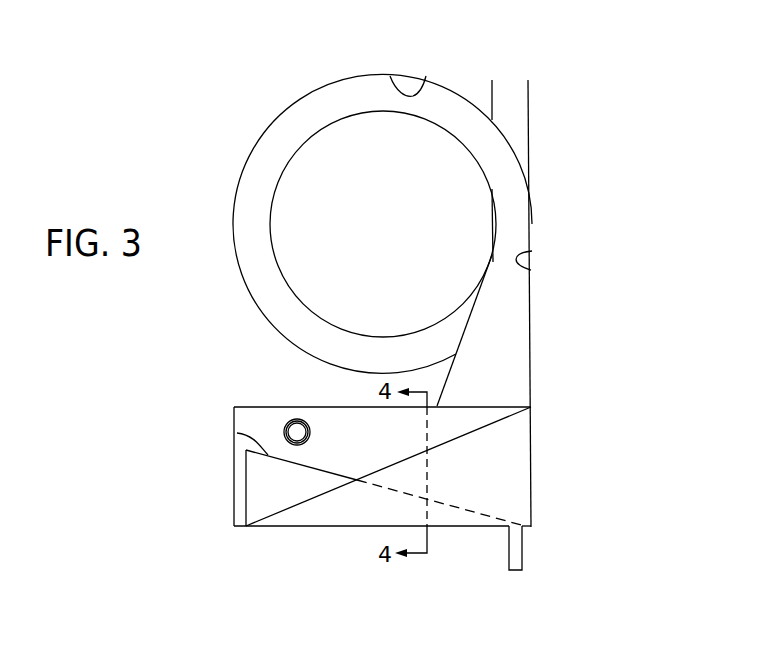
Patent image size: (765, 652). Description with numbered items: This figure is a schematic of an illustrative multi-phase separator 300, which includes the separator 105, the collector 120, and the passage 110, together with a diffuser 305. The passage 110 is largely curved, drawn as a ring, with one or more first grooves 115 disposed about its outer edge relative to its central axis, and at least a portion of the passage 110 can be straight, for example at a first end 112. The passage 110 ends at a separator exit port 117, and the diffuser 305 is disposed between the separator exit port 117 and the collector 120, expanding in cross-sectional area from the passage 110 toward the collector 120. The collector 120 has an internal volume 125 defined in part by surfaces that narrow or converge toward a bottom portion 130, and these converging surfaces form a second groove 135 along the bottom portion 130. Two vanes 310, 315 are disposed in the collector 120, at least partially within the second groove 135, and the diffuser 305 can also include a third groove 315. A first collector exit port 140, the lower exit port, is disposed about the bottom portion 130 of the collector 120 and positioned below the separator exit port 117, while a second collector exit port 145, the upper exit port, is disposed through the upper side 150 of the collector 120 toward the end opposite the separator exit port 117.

The multi-phase separator 300 is at (181, 124).
The separator 105 is at (280, 117).
The first grooves 115 is at (426, 76).
The passage 110 is at (511, 80).
The first end 112 is at (528, 80).
The separator exit port 117 is at (490, 254).
The vane 315 is at (532, 251).
The diffuser 305 is at (532, 307).
The internal volume 125 is at (410, 430).
The vane 310 is at (496, 420).
The upper side 150 is at (256, 406).
The second collector exit port 145 is at (291, 419).
The collector 120 is at (233, 478).
The bottom portion 130 is at (296, 528).
The second groove 135 is at (464, 526).
The first collector exit port 140 is at (522, 550).